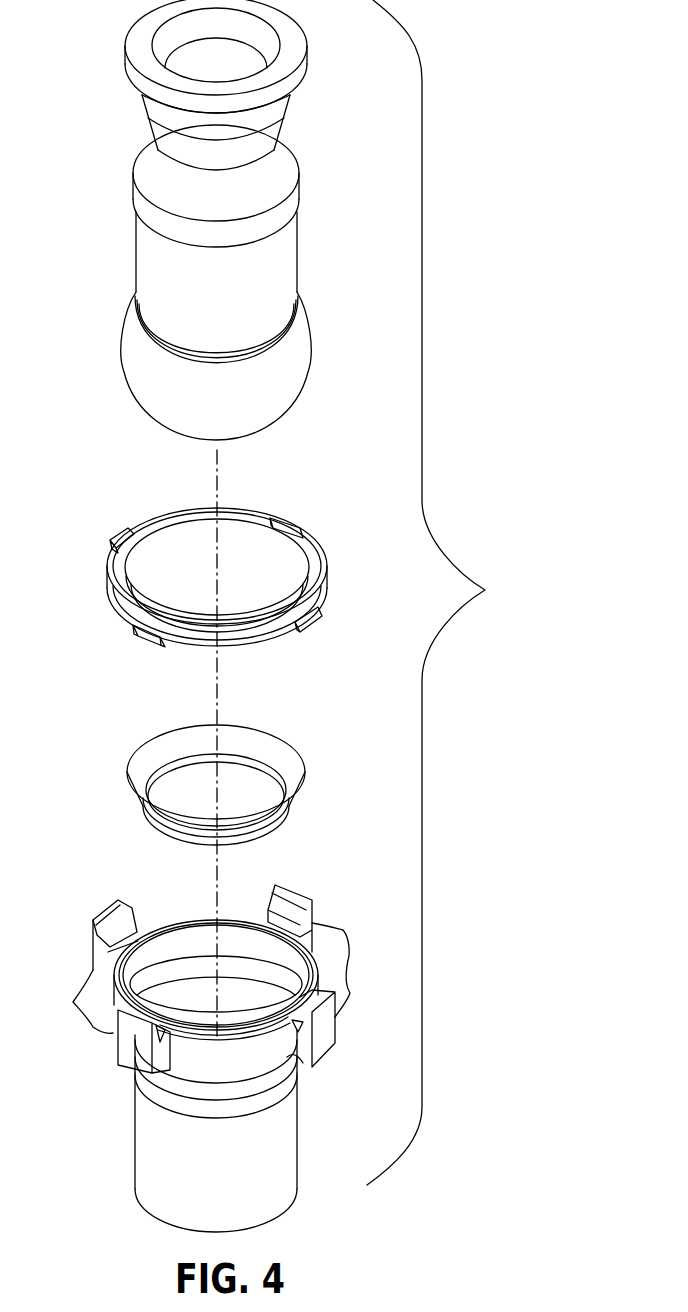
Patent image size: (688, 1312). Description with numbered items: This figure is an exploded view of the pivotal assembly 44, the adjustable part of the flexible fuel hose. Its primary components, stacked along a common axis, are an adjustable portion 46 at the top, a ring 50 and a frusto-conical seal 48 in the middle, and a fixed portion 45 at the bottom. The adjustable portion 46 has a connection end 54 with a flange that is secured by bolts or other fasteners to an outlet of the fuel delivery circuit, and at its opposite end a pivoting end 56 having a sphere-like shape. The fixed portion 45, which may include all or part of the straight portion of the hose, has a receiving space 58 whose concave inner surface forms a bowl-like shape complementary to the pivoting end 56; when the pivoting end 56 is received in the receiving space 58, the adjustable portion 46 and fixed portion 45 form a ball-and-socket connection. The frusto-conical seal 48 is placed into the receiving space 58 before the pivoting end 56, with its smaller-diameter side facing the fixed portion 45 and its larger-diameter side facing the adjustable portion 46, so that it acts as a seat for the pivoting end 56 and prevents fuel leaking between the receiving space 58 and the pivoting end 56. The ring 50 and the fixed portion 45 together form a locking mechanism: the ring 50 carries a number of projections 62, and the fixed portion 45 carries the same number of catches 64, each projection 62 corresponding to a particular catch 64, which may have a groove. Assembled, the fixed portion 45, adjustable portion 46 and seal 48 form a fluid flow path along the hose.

The pivotal assembly 44 is at (446, 592).
The connection end 54 is at (138, 50).
The adjustable portion 46 is at (135, 238).
The pivoting end 56 is at (134, 372).
The ring 50 is at (110, 595).
The projections 62 is at (118, 538).
The frusto-conical seal 48 is at (147, 767).
The receiving space 58 is at (168, 963).
The catches 64 is at (307, 923).
The fixed portion 45 is at (133, 1123).